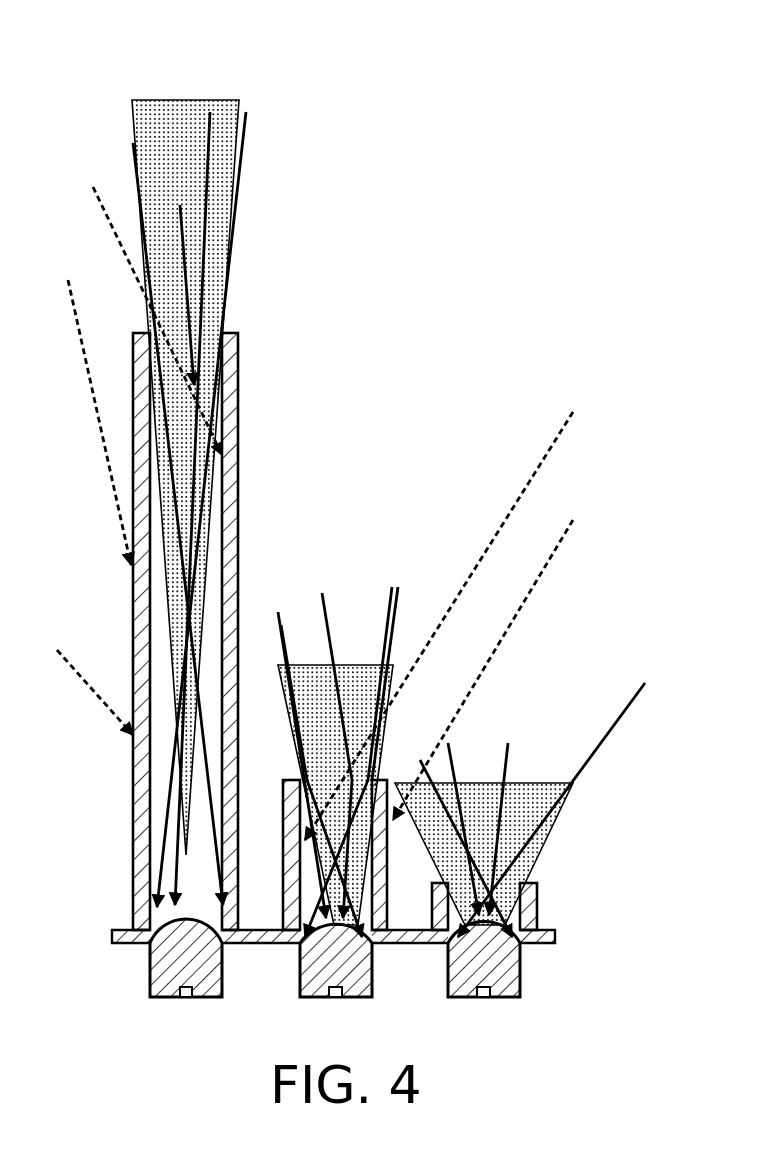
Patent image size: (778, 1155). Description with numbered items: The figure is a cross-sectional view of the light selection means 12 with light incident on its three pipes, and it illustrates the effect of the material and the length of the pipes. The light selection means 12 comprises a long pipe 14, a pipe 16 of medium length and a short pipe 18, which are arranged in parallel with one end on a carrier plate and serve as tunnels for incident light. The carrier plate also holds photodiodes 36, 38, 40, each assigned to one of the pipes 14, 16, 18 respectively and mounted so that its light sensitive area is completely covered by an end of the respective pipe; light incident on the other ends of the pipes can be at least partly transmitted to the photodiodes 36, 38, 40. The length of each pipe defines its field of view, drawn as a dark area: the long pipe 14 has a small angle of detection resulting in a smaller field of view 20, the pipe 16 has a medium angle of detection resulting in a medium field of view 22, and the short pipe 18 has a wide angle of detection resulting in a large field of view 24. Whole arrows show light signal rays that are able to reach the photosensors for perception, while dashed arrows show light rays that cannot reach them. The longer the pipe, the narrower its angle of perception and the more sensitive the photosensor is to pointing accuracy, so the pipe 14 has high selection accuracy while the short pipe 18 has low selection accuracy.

The light selection means 12 is at (566, 88).
The long pipe 14 is at (133, 630).
The pipe with medium length 16 is at (283, 800).
The short pipe 18 is at (537, 908).
The field of view 20 is at (182, 98).
The field of view 22 is at (338, 662).
The field of view 24 is at (486, 782).
The photodiode 36 is at (162, 968).
The photodiode 38 is at (312, 968).
The photodiode 40 is at (460, 968).